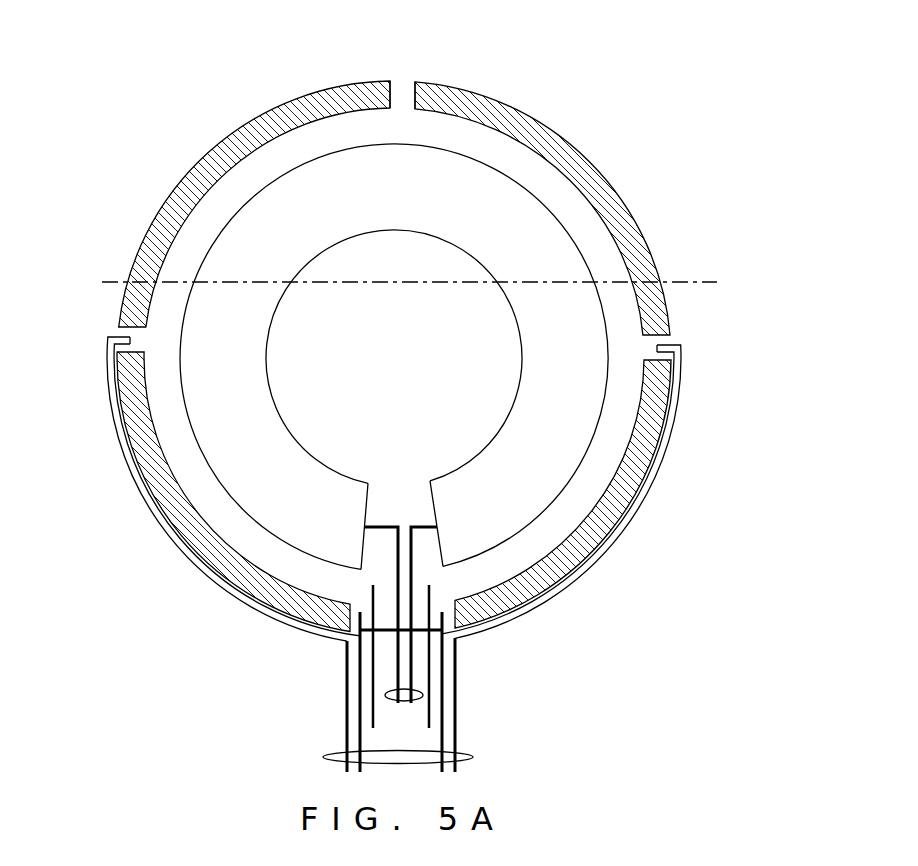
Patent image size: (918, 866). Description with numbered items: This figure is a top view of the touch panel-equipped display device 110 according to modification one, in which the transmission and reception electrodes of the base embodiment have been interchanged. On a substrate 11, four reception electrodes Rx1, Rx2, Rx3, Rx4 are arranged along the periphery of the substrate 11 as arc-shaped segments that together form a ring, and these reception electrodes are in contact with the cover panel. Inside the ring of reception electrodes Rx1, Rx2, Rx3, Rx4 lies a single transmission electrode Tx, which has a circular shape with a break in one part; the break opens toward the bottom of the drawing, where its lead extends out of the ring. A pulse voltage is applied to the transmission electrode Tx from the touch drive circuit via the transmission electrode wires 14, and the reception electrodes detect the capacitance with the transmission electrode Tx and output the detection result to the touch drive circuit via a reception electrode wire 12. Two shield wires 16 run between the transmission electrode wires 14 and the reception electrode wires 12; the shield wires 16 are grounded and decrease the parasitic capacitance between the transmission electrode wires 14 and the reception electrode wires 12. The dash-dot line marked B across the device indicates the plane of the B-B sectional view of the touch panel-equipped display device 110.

The touch panel-equipped display device 110 is at (544, 65).
The substrate 11 is at (397, 120).
The reception electrode Rx1 is at (222, 145).
The reception electrode Rx2 is at (180, 518).
The reception electrode Rx3 is at (612, 513).
The reception electrode Rx4 is at (622, 207).
The transmission electrode Tx is at (410, 203).
The shield wire 16 is at (373, 678).
The transmission electrode wire 14 is at (403, 703).
The reception electrode wire 12 is at (333, 754).
The B-B section line B is at (97, 282).